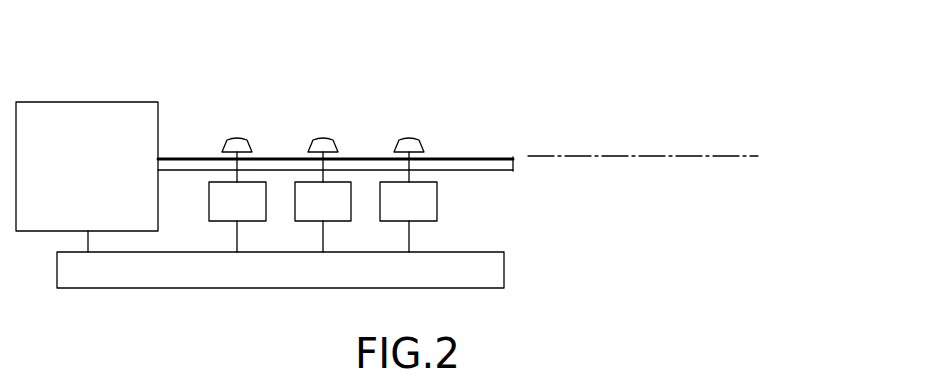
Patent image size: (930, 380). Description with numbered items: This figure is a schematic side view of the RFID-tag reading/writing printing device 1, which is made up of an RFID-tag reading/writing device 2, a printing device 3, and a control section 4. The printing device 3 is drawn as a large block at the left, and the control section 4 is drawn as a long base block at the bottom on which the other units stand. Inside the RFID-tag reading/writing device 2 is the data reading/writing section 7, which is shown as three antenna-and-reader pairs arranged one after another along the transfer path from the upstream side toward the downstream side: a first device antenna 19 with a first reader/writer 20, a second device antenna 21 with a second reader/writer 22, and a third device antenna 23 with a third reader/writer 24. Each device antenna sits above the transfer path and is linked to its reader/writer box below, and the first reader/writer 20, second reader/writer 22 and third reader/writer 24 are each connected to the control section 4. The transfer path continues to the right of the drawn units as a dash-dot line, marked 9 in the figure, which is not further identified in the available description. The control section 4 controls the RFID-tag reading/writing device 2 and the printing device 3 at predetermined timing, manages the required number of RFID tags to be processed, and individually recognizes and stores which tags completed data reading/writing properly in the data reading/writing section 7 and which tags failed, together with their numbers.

The RFID-tag reading/writing printing device 1 is at (448, 99).
The RFID-tag reading/writing device 2 is at (365, 124).
The printing device 3 is at (78, 97).
The control section 4 is at (504, 265).
The data reading/writing section 7 is at (452, 218).
The axis line 9 is at (463, 156).
The first device antenna 19 is at (409, 138).
The first reader/writer 20 is at (438, 190).
The second device antenna 21 is at (323, 138).
The second reader/writer 22 is at (352, 203).
The third device antenna 23 is at (237, 138).
The third reader/writer 24 is at (220, 222).